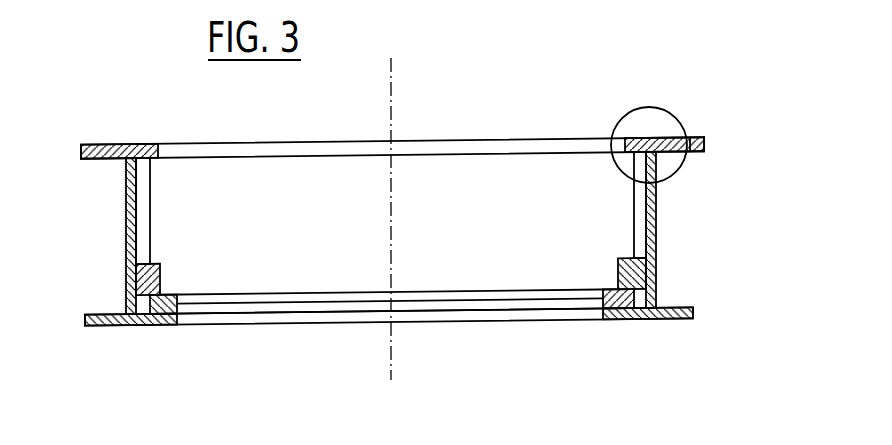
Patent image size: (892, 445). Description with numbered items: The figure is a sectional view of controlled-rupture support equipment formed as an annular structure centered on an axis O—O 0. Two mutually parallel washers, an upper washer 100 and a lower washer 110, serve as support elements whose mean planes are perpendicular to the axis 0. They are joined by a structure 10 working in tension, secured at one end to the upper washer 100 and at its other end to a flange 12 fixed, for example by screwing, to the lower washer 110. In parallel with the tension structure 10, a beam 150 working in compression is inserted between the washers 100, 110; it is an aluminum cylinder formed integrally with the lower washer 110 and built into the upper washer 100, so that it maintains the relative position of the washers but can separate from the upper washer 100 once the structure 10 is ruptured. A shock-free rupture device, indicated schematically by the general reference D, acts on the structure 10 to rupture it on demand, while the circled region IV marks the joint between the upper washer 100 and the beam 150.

The axis O—O 0 is at (392, 70).
The structure in tension 10 is at (622, 211).
The flange 12 is at (612, 293).
The upper washer 100 is at (705, 147).
The lower washer 110 is at (694, 308).
The beam working in compression 150 is at (656, 217).
The shock-free rupture device D is at (165, 280).
The detail IV is at (658, 108).